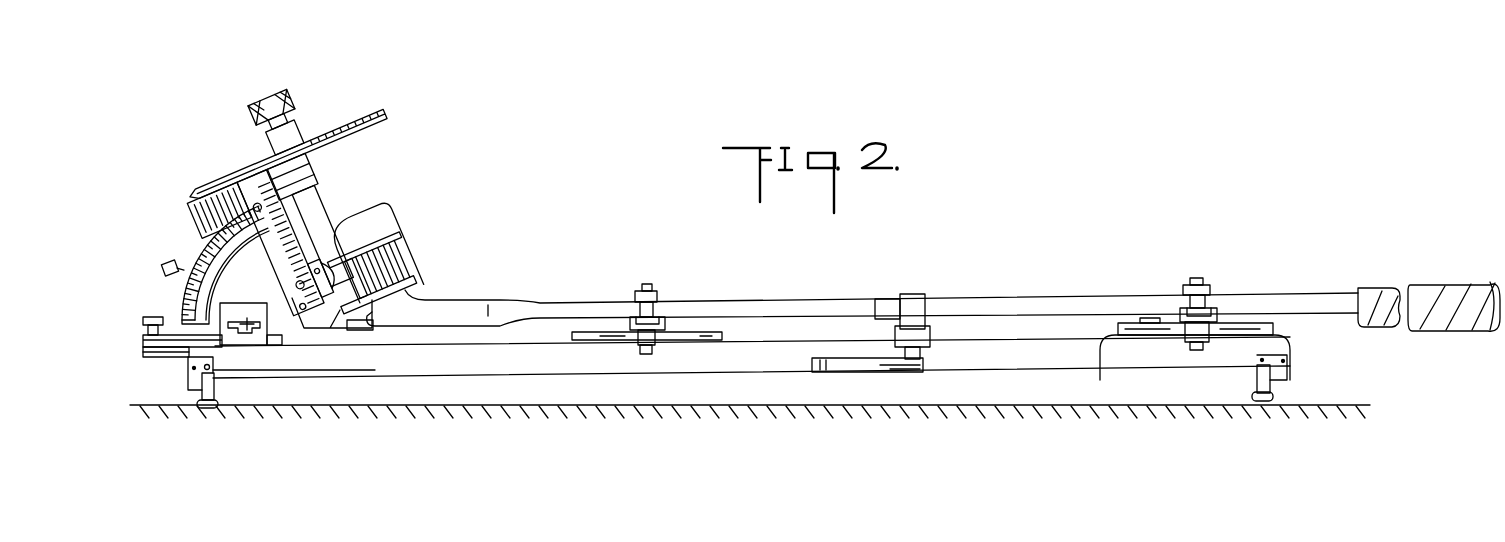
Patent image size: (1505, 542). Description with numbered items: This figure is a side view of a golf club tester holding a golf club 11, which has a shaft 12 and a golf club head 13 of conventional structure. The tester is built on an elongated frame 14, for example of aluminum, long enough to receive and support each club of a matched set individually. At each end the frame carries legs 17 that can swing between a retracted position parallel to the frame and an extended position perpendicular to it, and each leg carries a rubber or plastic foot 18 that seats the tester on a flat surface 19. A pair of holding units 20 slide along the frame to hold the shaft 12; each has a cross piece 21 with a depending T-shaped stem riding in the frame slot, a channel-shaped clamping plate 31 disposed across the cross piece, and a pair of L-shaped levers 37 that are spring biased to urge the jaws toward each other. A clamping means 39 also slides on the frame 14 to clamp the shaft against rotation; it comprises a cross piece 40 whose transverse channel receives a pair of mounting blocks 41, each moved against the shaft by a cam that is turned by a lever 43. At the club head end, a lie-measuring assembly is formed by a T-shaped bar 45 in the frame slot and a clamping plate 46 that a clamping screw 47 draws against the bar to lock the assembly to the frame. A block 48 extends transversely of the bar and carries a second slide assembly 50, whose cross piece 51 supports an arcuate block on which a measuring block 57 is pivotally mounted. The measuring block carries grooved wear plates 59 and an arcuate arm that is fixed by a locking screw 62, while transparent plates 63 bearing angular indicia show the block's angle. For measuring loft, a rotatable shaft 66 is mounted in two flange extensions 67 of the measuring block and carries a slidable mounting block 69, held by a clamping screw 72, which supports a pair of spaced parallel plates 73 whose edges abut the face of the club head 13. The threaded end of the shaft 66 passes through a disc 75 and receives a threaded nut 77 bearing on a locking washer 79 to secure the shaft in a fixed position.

The golf club 11 is at (1352, 282).
The shaft 12 is at (803, 300).
The golf club head 13 is at (388, 205).
The elongated frame 14 is at (462, 345).
The leg 17 is at (215, 388).
The foot 18 is at (207, 409).
The flat surface 19 is at (372, 416).
The holding unit 20 is at (626, 287).
The cross piece 21 is at (640, 345).
The clamping plate 31 is at (662, 317).
The L-shaped lever 37 is at (590, 333).
The clamping means 39 is at (921, 290).
The cross piece 40 is at (925, 347).
The mounting block 41 is at (925, 304).
The lever 43 is at (850, 372).
The T-shaped bar 45 is at (143, 340).
The clamping plate 46 is at (168, 357).
The clamping screw 47 is at (152, 316).
The block 48 is at (268, 341).
The second slide assembly 50 is at (249, 303).
The cross piece 51 is at (255, 345).
The measuring block 57 is at (318, 328).
The wear plate 59 is at (254, 195).
The locking screw 62 is at (170, 262).
The transparent plate 63 is at (196, 252).
The rotatable shaft 66 is at (317, 192).
The flange extension 67 is at (316, 166).
The mounting block 69 is at (375, 265).
The clamping screw 72 is at (314, 268).
The plate 73 is at (400, 230).
The disc 75 is at (360, 114).
The threaded nut 77 is at (283, 99).
The locking washer 79 is at (292, 118).